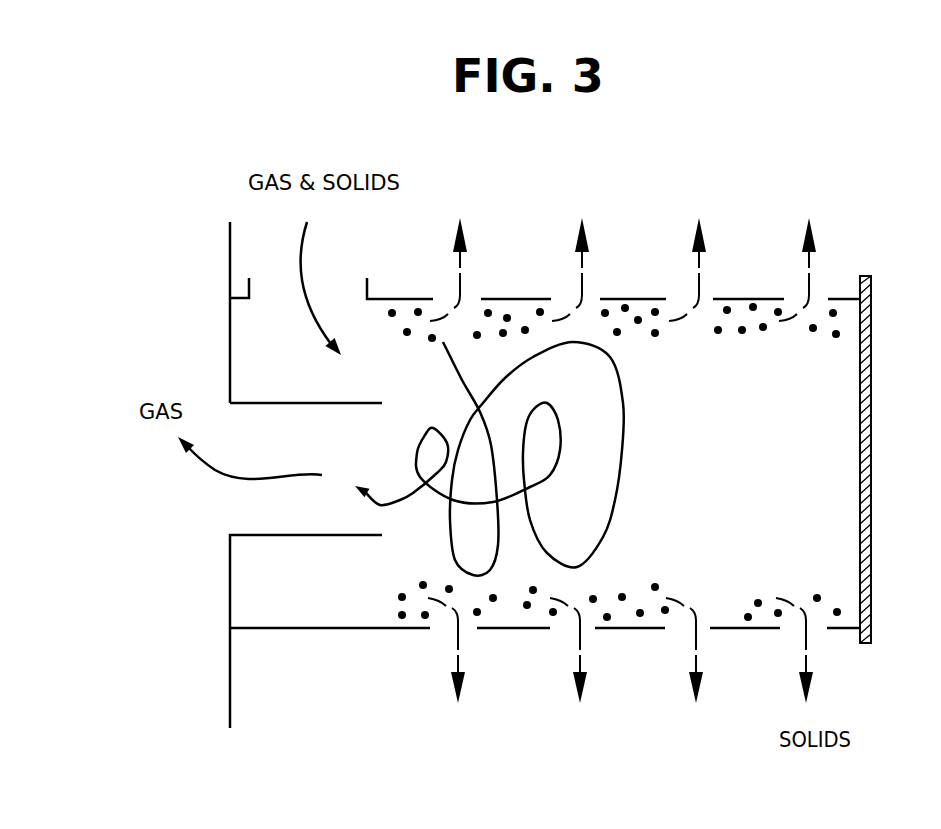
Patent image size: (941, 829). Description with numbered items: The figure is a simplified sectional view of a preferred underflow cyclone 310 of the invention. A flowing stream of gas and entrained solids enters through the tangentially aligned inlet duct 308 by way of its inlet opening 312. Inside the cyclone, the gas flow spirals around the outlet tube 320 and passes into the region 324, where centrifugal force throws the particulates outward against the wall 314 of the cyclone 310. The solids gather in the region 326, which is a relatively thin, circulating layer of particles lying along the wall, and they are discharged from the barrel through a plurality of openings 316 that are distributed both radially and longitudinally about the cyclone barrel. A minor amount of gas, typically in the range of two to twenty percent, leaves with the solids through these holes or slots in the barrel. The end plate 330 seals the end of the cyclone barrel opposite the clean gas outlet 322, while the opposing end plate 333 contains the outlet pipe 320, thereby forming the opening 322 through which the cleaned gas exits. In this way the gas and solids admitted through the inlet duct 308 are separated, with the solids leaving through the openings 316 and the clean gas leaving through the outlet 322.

The inlet duct 308 is at (230, 250).
The cyclone 310 is at (265, 628).
The inlet opening 312 is at (328, 292).
The wall 314 is at (508, 299).
The openings 316 is at (590, 297).
The outlet tube 320 is at (333, 403).
The clean gas outlet 322 is at (392, 428).
The region 324 is at (765, 465).
The region 326 is at (740, 604).
The end plate 330 is at (871, 388).
The opposing end plate 333 is at (229, 572).